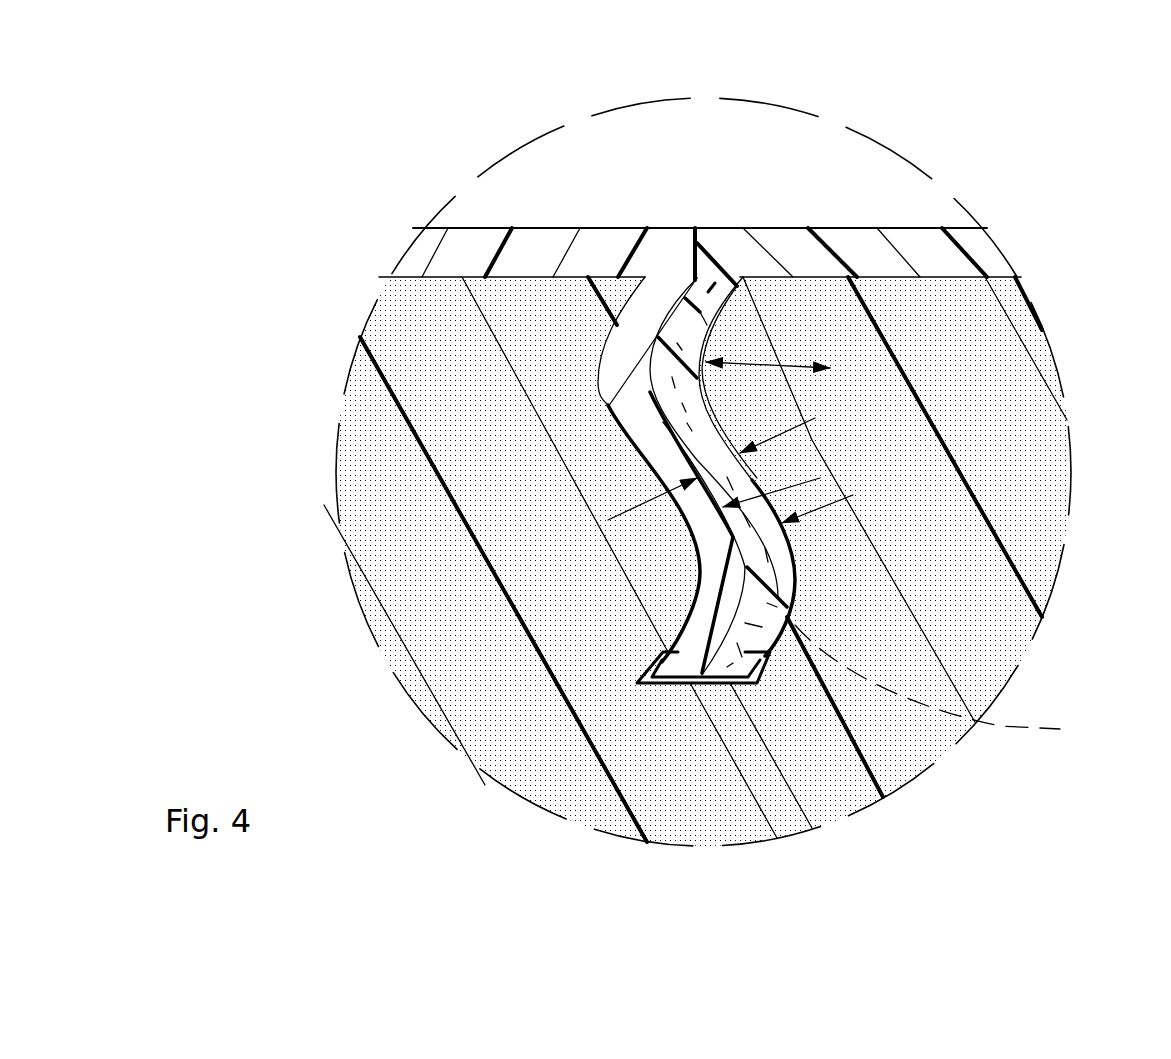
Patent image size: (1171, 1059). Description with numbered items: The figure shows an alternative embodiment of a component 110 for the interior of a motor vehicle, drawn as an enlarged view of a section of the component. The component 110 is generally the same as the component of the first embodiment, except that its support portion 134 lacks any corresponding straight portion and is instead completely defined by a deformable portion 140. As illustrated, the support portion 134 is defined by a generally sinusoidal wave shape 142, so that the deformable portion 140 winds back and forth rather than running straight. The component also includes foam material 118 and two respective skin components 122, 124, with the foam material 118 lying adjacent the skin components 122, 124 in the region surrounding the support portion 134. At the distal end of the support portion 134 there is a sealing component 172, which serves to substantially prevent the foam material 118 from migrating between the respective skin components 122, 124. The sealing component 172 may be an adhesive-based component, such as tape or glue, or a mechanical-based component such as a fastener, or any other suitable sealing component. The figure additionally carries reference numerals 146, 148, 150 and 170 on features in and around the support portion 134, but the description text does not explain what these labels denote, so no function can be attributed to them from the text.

The component 110 is at (653, 147).
The foam material 118 is at (960, 583).
The skin component 122 is at (615, 243).
The skin component 124 is at (900, 237).
The support portion 134 is at (578, 357).
The deformable portion 140 is at (608, 410).
The generally sinusoidal wave shape 142 is at (951, 683).
The gap 146 is at (790, 362).
The seal web 148 is at (622, 512).
The seal leg 150 is at (683, 533).
The base plate 170 is at (697, 567).
The sealing component 172 is at (822, 822).